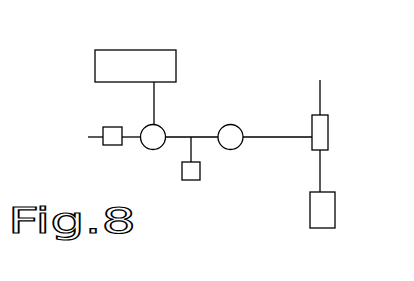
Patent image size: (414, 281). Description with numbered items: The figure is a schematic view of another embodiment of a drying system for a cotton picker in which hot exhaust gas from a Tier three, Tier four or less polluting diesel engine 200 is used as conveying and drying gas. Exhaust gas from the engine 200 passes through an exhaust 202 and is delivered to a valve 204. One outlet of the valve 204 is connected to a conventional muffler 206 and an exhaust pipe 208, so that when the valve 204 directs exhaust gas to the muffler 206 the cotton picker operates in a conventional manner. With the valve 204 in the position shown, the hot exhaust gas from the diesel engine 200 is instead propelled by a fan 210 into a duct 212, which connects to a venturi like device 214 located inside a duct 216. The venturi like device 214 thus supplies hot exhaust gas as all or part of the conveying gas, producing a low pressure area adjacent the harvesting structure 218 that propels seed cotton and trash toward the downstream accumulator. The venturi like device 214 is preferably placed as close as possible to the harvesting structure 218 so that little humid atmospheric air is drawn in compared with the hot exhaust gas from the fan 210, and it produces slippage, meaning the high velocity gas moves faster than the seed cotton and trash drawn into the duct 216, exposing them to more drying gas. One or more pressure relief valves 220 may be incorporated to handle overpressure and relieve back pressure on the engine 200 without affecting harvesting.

The diesel engine 200 is at (129, 49).
The exhaust 202 is at (162, 121).
The valve 204 is at (150, 125).
The muffler 206 is at (120, 146).
The exhaust pipe 208 is at (100, 137).
The fan 210 is at (218, 130).
The duct 212 is at (281, 133).
The venturi like device 214 is at (322, 147).
The duct 216 is at (318, 95).
The harvesting structure 218 is at (311, 200).
The pressure relief valve 220 is at (200, 167).